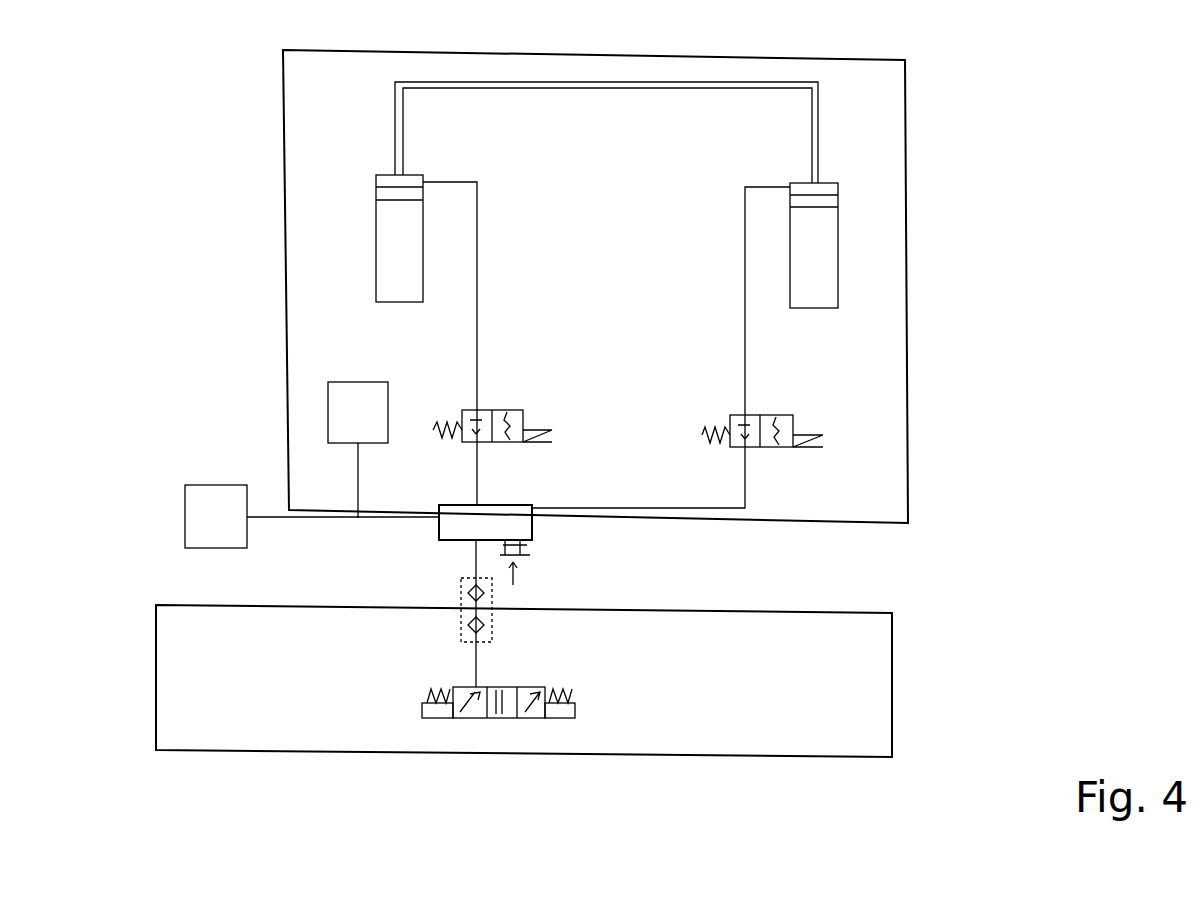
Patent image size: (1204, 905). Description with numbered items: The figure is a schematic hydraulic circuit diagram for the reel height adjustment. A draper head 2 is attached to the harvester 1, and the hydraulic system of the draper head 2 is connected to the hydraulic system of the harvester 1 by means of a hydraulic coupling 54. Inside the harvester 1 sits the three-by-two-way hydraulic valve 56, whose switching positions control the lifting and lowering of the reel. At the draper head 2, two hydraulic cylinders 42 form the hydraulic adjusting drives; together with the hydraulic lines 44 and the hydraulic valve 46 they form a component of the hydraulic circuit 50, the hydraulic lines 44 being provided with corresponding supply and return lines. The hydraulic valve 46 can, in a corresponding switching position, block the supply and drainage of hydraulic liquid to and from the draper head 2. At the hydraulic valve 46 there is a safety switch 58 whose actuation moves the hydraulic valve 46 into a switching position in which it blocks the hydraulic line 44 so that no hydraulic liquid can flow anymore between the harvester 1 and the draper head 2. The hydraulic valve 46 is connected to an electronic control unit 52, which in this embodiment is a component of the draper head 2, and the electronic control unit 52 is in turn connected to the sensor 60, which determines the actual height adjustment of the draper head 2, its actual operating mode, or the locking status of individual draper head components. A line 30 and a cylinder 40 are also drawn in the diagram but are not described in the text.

The harvester 1 is at (880, 648).
The draper head 2 is at (895, 205).
The pressure line 30 is at (505, 90).
The first pneumatic cylinder 40 is at (838, 253).
The hydraulic cylinder 42 is at (378, 232).
The hydraulic line 44 is at (477, 338).
The hydraulic valve 46 is at (438, 530).
The hydraulic circuit 50 is at (742, 628).
The electronic control unit 52 is at (312, 516).
The hydraulic coupling 54 is at (492, 615).
The 3/2-way hydraulic valve 56 is at (497, 705).
The safety switch 58 is at (530, 548).
The sensor 60 is at (358, 450).